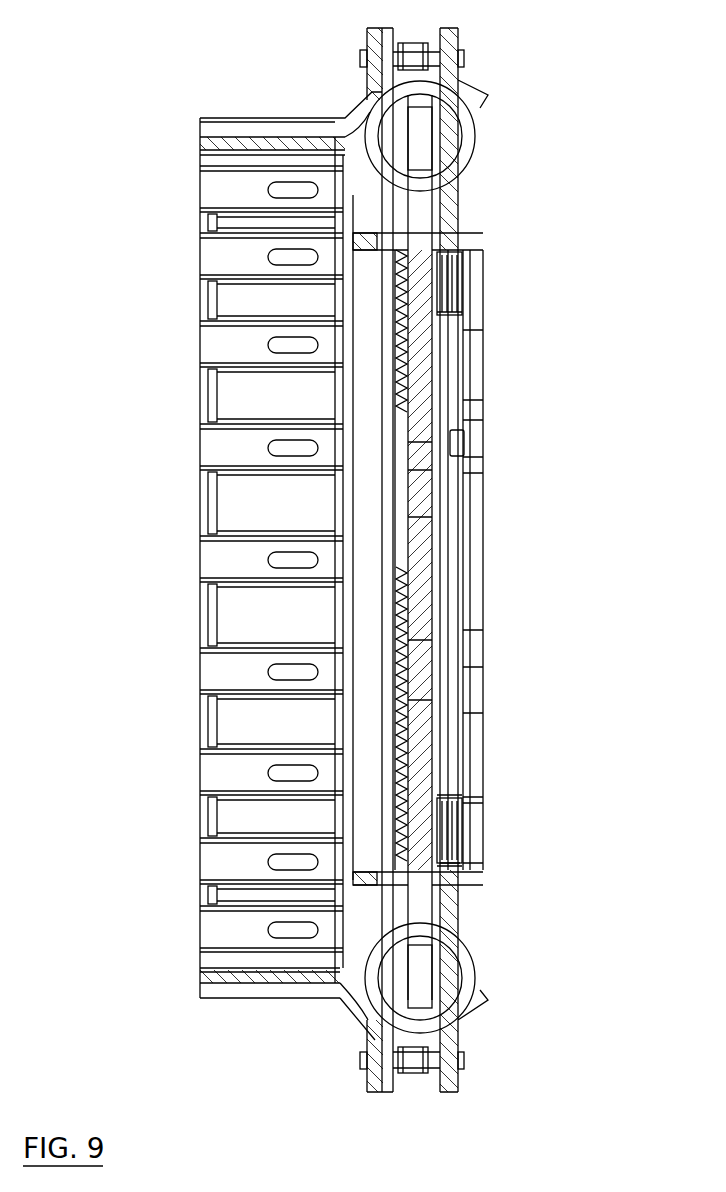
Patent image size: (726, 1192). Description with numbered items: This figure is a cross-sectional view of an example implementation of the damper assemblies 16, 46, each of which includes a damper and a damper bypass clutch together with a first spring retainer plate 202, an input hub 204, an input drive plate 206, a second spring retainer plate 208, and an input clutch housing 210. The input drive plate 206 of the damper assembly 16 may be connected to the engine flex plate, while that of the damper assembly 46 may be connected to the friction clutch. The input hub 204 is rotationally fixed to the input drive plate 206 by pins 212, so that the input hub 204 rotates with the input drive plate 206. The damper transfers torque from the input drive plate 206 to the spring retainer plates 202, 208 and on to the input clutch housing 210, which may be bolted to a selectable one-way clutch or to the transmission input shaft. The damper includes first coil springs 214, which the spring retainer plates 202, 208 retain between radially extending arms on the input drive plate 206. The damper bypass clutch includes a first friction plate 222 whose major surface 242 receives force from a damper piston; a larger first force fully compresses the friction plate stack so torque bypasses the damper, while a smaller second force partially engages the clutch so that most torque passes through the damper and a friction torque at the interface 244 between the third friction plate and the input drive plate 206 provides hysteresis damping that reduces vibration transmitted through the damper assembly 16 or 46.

The damper assembly 16 is at (193, 80).
The damper assembly 46 is at (390, 560).
The first spring retainer plate 202 is at (453, 1083).
The input hub 204 is at (432, 755).
The input drive plate 206 is at (420, 695).
The second spring retainer plate 208 is at (373, 1083).
The input clutch housing 210 is at (232, 998).
The pins 212 is at (465, 442).
The first coil springs 214 is at (477, 982).
The first friction plate 222 is at (462, 843).
The major surface 242 is at (462, 826).
The interface 244 is at (462, 280).